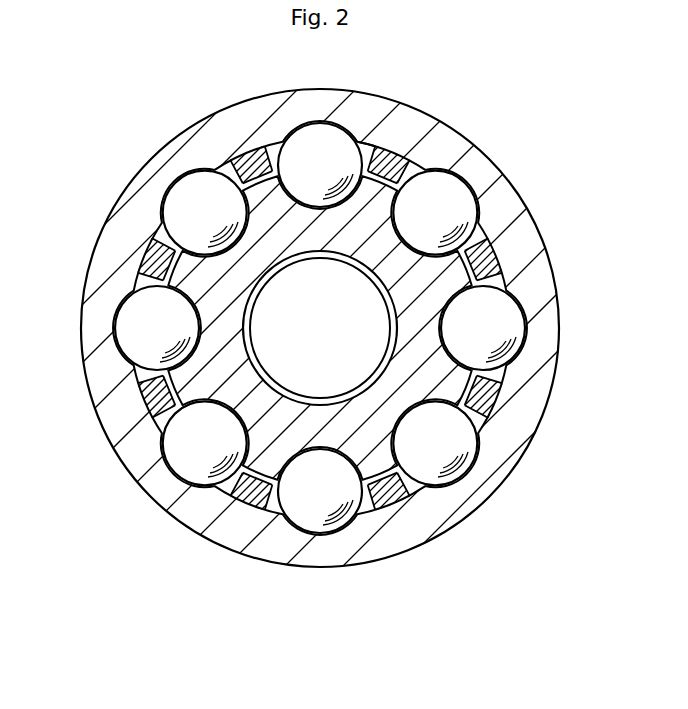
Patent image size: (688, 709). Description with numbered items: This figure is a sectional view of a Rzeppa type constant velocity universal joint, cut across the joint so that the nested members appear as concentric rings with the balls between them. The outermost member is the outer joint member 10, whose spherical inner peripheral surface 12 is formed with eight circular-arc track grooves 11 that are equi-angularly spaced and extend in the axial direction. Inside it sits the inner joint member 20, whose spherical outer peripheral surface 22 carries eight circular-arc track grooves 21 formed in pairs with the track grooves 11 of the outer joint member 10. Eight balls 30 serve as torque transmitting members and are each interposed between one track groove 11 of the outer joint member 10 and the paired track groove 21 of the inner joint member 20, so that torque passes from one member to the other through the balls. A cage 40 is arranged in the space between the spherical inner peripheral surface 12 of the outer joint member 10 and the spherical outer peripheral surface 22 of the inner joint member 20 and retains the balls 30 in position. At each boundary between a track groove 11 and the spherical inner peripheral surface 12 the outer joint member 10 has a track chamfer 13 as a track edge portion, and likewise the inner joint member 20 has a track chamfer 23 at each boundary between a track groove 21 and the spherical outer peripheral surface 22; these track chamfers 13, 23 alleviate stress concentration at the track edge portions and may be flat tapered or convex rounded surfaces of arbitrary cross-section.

The outer joint member 10 is at (490, 152).
The track grooves 11 is at (512, 312).
The spherical inner peripheral surface 12 is at (222, 498).
The track chamfer 13 is at (438, 173).
The inner joint member 20 is at (410, 480).
The track grooves 21 is at (206, 240).
The spherical outer peripheral surface 22 is at (233, 172).
The track chamfer 23 is at (246, 318).
The balls 30 is at (484, 196).
The cage 40 is at (365, 146).